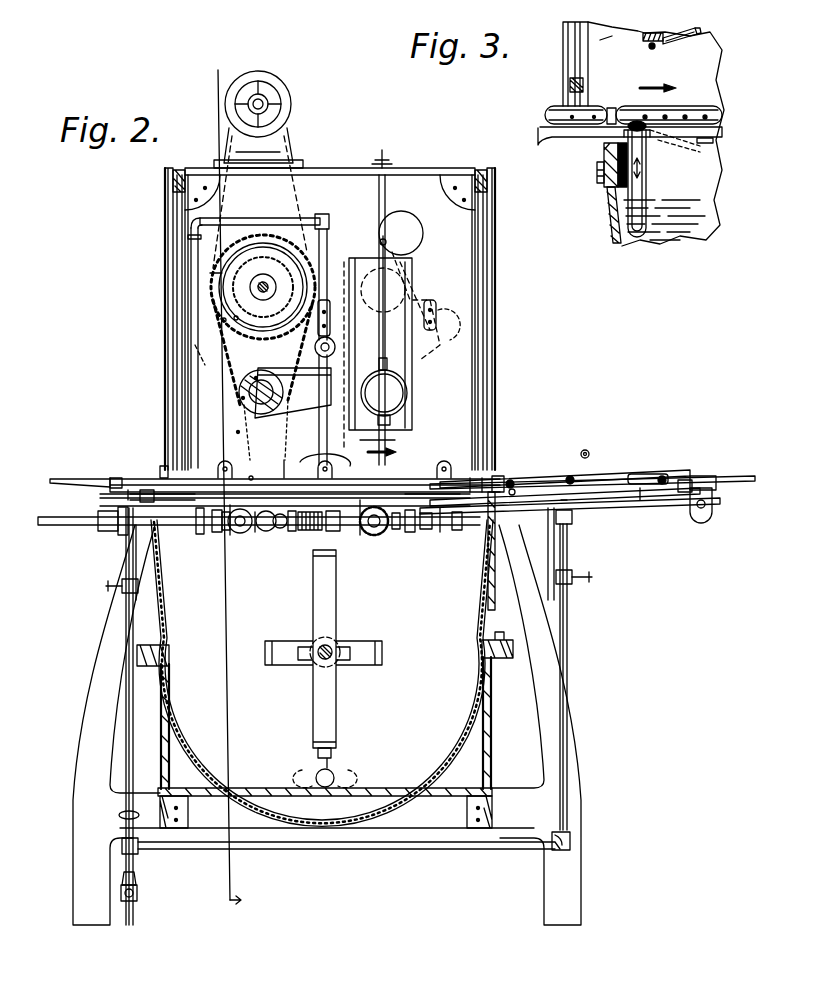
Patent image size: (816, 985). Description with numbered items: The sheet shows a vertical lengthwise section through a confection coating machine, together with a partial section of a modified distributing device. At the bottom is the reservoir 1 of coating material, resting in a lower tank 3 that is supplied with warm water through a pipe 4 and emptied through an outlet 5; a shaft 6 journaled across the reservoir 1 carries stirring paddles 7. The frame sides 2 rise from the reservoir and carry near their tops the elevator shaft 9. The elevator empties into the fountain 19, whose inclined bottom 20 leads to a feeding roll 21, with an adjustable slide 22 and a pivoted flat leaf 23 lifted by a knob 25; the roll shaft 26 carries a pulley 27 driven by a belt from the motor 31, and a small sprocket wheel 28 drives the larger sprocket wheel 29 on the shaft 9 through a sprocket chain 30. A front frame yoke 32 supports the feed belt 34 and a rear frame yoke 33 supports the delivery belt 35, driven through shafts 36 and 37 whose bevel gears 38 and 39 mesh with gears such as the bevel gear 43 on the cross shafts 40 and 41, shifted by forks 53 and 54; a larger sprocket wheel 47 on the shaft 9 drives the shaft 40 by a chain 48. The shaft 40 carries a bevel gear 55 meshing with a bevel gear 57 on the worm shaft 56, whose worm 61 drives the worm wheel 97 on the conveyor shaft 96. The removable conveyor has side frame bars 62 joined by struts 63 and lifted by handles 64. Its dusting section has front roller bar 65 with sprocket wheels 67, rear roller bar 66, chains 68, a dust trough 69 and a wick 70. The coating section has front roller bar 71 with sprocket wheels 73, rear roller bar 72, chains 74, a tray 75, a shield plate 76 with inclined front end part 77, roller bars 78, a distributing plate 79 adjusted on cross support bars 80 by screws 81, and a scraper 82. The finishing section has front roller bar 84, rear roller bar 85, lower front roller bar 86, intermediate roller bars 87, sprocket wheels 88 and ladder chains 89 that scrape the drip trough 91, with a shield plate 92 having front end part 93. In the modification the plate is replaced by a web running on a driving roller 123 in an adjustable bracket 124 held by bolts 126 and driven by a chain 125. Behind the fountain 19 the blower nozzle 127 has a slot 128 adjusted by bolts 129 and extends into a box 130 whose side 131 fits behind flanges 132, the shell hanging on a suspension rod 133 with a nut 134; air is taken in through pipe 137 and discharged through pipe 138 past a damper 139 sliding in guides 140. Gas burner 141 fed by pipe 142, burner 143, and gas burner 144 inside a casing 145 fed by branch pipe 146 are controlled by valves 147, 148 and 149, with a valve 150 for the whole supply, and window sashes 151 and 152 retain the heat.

In FIG. 2, the reservoir 1 is at (218, 72).
In FIG. 3, the reservoir 1 is at (610, 226).
In FIG. 2, the frame side 2 is at (90, 662).
In FIG. 3, the frame side 2 is at (606, 38).
In FIG. 2, the lower tank 3 is at (490, 745).
In FIG. 2, the pipe 4 is at (242, 740).
In FIG. 2, the outlet 5 is at (338, 778).
In FIG. 2, the shaft 6 is at (332, 648).
In FIG. 2, the stirring blades 7 is at (330, 550).
In FIG. 2, the shaft 9 is at (258, 285).
In FIG. 2, the fountain 19 is at (325, 405).
In FIG. 3, the fountain 19 is at (694, 38).
In FIG. 2, the bottom 20 is at (289, 422).
In FIG. 3, the bottom 20 is at (675, 42).
In FIG. 2, the feeding roll 21 is at (290, 330).
In FIG. 3, the feeding roll 21 is at (654, 33).
In FIG. 2, the adjustable slide 22 is at (252, 420).
In FIG. 3, the adjustable slide 22 is at (648, 47).
In FIG. 2, the flat leaf 23 is at (236, 320).
In FIG. 2, the knob 25 is at (255, 378).
In FIG. 2, the shaft 26 is at (250, 405).
In FIG. 2, the pulley 27 is at (195, 355).
In FIG. 2, the small sprocket wheel 28 is at (242, 398).
In FIG. 2, the larger sprocket wheel 29 is at (210, 273).
In FIG. 2, the sprocket chain 30 is at (222, 320).
In FIG. 2, the motor 31 is at (288, 110).
In FIG. 2, the front frame yoke 32 is at (297, 203).
In FIG. 2, the rear frame yoke 33 is at (556, 546).
In FIG. 2, the feed belt 34 is at (96, 480).
In FIG. 2, the delivery belt 35 is at (720, 476).
In FIG. 2, the shaft 36 is at (60, 526).
In FIG. 2, the shaft 37 is at (612, 516).
In FIG. 2, the bevel gear 38 is at (240, 533).
In FIG. 2, the bevel gear 39 is at (390, 530).
In FIG. 2, the shaft 40 is at (266, 532).
In FIG. 2, the shaft 41 is at (372, 535).
In FIG. 2, the bevel gear 43 is at (380, 538).
In FIG. 2, the larger sprocket wheel 47 is at (252, 222).
In FIG. 2, the chain 48 is at (236, 433).
In FIG. 2, the fork 53 is at (222, 530).
In FIG. 2, the fork 54 is at (425, 532).
In FIG. 2, the bevel gear 55 is at (260, 540).
In FIG. 2, the worm shaft 56 is at (292, 522).
In FIG. 2, the bevel gear 57 is at (280, 528).
In FIG. 2, the worm 61 is at (318, 524).
In FIG. 2, the side frame bars 62 is at (515, 480).
In FIG. 3, the side frame bars 62 is at (680, 106).
In FIG. 2, the transverse struts 63 is at (116, 478).
In FIG. 2, the handles 64 is at (228, 462).
In FIG. 2, the front roller bar 65 is at (132, 478).
In FIG. 2, the rear roller bar 66 is at (180, 508).
In FIG. 3, the rear roller bar 66 is at (585, 108).
In FIG. 2, the sprocket wheels 67 is at (148, 478).
In FIG. 2, the sprocket chains 68 is at (165, 460).
In FIG. 2, the trough 69 is at (200, 512).
In FIG. 2, the wick 70 is at (128, 540).
In FIG. 3, the wick 70 is at (552, 138).
In FIG. 2, the front roller bar 71 is at (236, 455).
In FIG. 2, the rear roller bar 72 is at (470, 478).
In FIG. 2, the sprocket wheels 73 is at (250, 478).
In FIG. 2, the chains 74 is at (432, 480).
In FIG. 2, the tray 75 is at (315, 465).
In FIG. 2, the shield plate 76 is at (444, 462).
In FIG. 2, the front end part 77 is at (325, 458).
In FIG. 2, the roller bars 78 is at (281, 466).
In FIG. 2, the distributing plate 79 is at (410, 524).
In FIG. 3, the distributing plate 79 is at (648, 158).
In FIG. 2, the cross support bars 80 is at (240, 512).
In FIG. 2, the adjusting screws 81 is at (228, 535).
In FIG. 2, the scraper 82 is at (216, 512).
In FIG. 3, the scraper 82 is at (611, 112).
In FIG. 2, the front roller bar 84 is at (494, 478).
In FIG. 2, the rear roller bar 85 is at (690, 478).
In FIG. 2, the lower front roller bar 86 is at (556, 548).
In FIG. 2, the intermediate roller bars 87 is at (538, 484).
In FIG. 2, the sprocket wheels 88 is at (502, 478).
In FIG. 2, the ladder chains 89 is at (620, 478).
In FIG. 2, the drip trough 91 is at (640, 498).
In FIG. 2, the shield plate 92 is at (580, 494).
In FIG. 2, the front end part 93 is at (494, 512).
In FIG. 2, the shaft 96 is at (338, 522).
In FIG. 2, the worm wheel 97 is at (374, 446).
In FIG. 3, the driving roller 123 is at (636, 122).
In FIG. 3, the bracket 124 is at (604, 153).
In FIG. 3, the chain 125 is at (684, 136).
In FIG. 3, the bolts 126 is at (600, 175).
In FIG. 2, the blower nozzle 127 is at (405, 388).
In FIG. 2, the slot 128 is at (392, 418).
In FIG. 2, the bolts 129 is at (390, 452).
In FIG. 2, the box 130 is at (412, 365).
In FIG. 2, the side 131 is at (412, 262).
In FIG. 2, the flanges 132 is at (345, 262).
In FIG. 2, the suspension rod 133 is at (386, 190).
In FIG. 2, the nut 134 is at (384, 158).
In FIG. 2, the pipe 137 is at (420, 232).
In FIG. 2, the pipe 138 is at (375, 312).
In FIG. 2, the damper 139 is at (440, 298).
In FIG. 2, the guides 140 is at (380, 240).
In FIG. 2, the gas burner 141 is at (100, 516).
In FIG. 2, the pipe 142 is at (126, 626).
In FIG. 2, the burner 143 is at (565, 512).
In FIG. 2, the gas burner 144 is at (290, 385).
In FIG. 2, the casing 145 is at (335, 350).
In FIG. 2, the branch pipe 146 is at (330, 216).
In FIG. 2, the valve 147 is at (106, 587).
In FIG. 2, the valve 148 is at (592, 578).
In FIG. 2, the valve 149 is at (95, 503).
In FIG. 2, the valve 150 is at (140, 892).
In FIG. 2, the window sash 151 is at (180, 229).
In FIG. 3, the window sash 151 is at (572, 69).
In FIG. 2, the window sash 152 is at (482, 362).